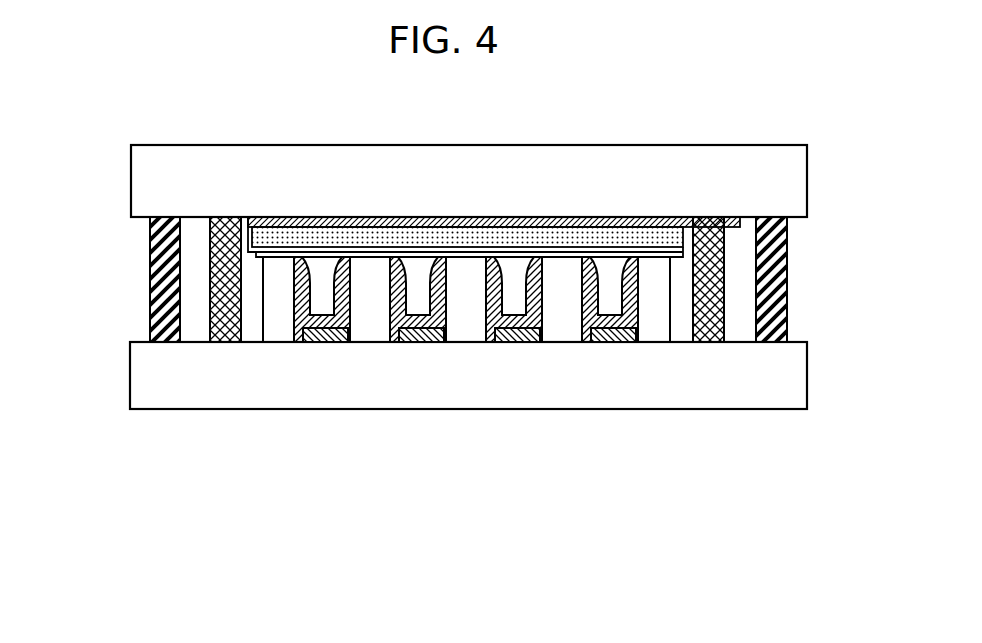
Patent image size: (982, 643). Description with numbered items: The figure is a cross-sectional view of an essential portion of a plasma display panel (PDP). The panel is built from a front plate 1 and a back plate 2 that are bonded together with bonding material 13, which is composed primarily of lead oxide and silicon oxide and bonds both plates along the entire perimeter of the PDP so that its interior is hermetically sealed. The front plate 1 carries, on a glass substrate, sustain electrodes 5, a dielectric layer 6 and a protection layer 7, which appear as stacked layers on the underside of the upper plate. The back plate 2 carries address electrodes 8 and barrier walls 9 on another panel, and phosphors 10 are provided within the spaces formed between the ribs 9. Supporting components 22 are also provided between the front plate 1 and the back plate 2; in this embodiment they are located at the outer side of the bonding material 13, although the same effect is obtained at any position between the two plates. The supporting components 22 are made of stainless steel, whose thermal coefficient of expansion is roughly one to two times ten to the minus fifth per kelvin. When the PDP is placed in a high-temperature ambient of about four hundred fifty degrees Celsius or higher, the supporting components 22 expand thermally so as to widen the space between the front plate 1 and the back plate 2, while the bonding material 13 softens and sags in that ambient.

The front plate 1 is at (222, 168).
The back plate 2 is at (175, 370).
The sustain electrodes 5 is at (705, 220).
The dielectric layer 6 is at (253, 236).
The protection layer 7 is at (253, 253).
The address electrodes 8 is at (328, 343).
The barrier walls 9 is at (651, 327).
The phosphors 10 is at (580, 307).
The bonding material 13 is at (723, 322).
The supporting components 22 is at (163, 307).